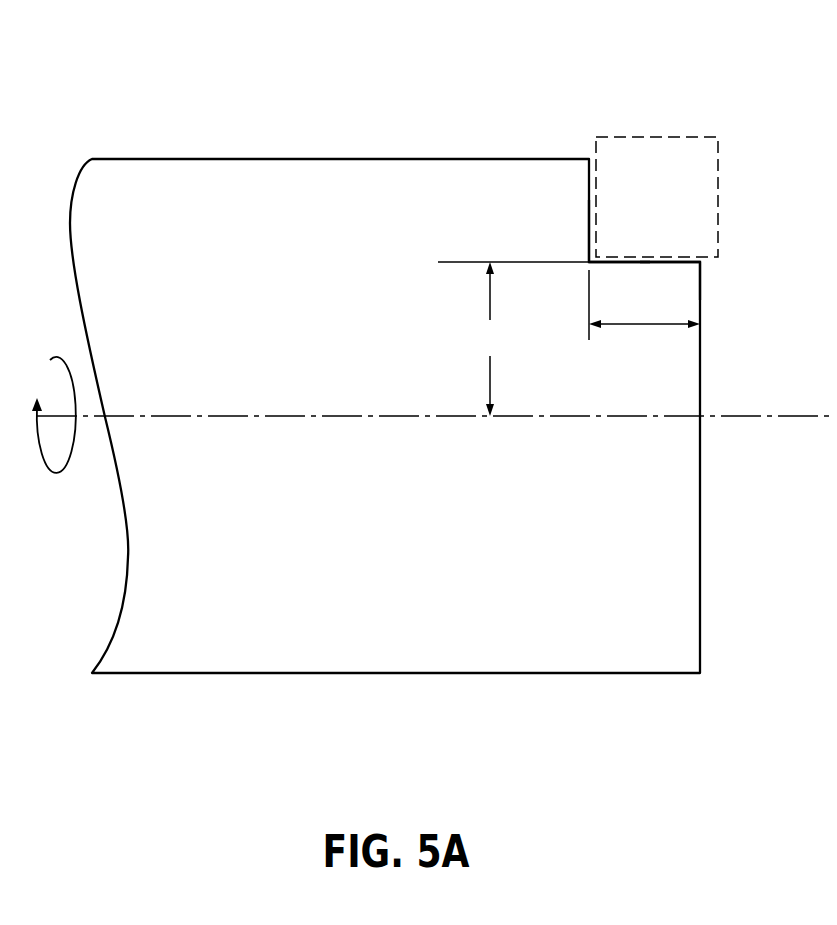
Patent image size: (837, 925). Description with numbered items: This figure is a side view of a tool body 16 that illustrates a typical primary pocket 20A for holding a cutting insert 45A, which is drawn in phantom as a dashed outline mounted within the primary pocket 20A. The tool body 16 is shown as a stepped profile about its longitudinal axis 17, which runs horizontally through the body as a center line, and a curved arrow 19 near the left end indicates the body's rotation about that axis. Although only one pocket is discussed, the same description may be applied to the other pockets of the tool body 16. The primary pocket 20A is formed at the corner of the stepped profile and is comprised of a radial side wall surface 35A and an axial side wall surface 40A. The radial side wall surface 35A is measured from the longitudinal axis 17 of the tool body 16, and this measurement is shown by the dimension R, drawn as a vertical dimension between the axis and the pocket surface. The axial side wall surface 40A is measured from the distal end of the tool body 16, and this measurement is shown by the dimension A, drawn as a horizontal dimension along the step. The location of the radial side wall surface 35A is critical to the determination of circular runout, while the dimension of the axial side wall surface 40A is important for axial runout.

The tool body 16 is at (242, 185).
The longitudinal axis 17 is at (325, 416).
The direction of rotation 19 is at (58, 470).
The primary pocket 20A is at (589, 205).
The axial side wall surface 40A is at (592, 173).
The cutting insert 45A is at (702, 136).
The radial side wall surface 35A is at (683, 262).
The dimension R is at (513, 339).
The dimension A is at (655, 326).